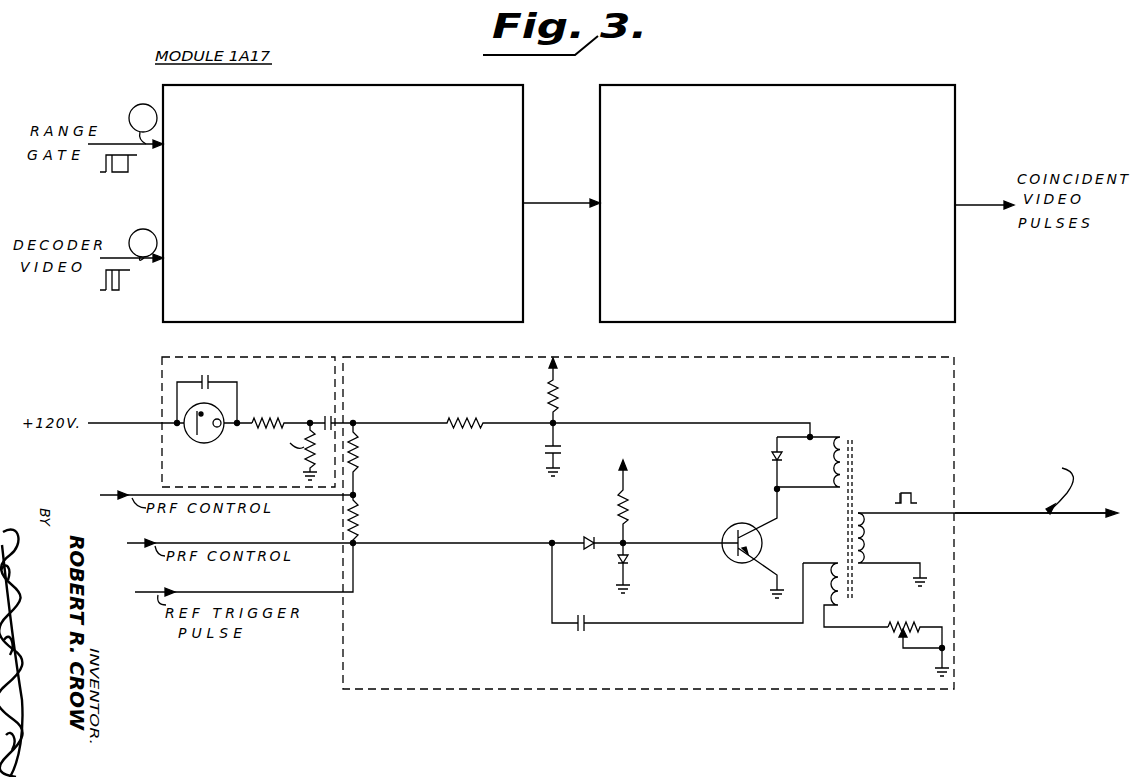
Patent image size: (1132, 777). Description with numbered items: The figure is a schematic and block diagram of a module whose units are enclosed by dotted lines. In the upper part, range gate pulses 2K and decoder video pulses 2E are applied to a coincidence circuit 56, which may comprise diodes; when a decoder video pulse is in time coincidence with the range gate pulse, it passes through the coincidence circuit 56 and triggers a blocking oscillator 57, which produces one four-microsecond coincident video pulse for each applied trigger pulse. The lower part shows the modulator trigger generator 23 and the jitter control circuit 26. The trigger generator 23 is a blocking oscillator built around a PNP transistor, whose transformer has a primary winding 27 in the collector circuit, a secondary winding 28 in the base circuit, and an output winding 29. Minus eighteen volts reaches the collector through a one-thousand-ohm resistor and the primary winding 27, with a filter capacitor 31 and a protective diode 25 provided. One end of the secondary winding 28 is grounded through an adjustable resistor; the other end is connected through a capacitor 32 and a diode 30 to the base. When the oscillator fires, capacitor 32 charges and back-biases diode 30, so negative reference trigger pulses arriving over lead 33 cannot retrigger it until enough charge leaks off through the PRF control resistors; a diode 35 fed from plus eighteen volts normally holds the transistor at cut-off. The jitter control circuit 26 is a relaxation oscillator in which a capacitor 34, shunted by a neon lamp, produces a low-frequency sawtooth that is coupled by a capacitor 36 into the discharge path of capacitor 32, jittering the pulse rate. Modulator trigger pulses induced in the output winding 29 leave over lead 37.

The coincidence circuit 56 is at (339, 85).
The blocking oscillator 57 is at (792, 86).
The jitter control circuit 26 is at (268, 358).
The modulator trigger generator 23 is at (716, 358).
The capacitor 34 is at (211, 383).
The capacitor 36 is at (326, 408).
The filter capacitor 31 is at (545, 451).
The diode 30 is at (587, 535).
The diode 35 is at (630, 560).
The protective diode 25 is at (771, 458).
The primary winding 27 is at (836, 462).
The secondary winding 28 is at (834, 582).
The output winding 29 is at (866, 537).
The capacitor 32 is at (576, 630).
The lead 33 is at (335, 580).
The lead 37 is at (1006, 514).
The range gate pulses 2K is at (143, 124).
The decoder video pulses 2E is at (143, 244).